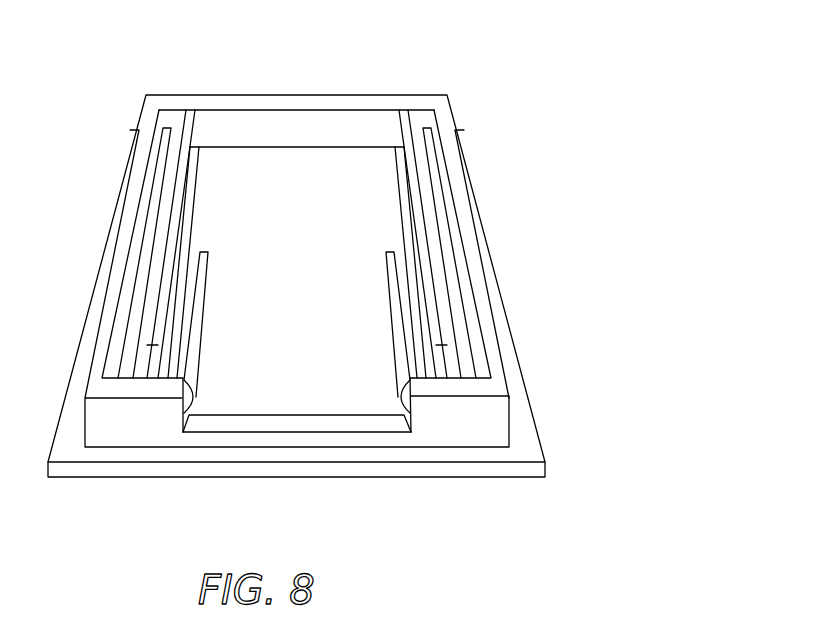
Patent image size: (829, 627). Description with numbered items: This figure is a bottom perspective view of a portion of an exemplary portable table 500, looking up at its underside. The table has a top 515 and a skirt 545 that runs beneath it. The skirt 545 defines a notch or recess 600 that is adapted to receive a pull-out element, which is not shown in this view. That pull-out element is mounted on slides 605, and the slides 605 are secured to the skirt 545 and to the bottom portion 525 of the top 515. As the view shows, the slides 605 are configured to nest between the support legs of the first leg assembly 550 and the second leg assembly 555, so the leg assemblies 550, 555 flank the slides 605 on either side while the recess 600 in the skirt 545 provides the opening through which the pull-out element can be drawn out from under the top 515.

The portable table 500 is at (624, 196).
The top 515 is at (509, 480).
The skirt 545 is at (118, 440).
The first leg assembly 550 is at (160, 130).
The second leg assembly 555 is at (184, 112).
The bottom portion 525 is at (318, 207).
The notch or recess 600 is at (257, 428).
The slides 605 is at (203, 276).